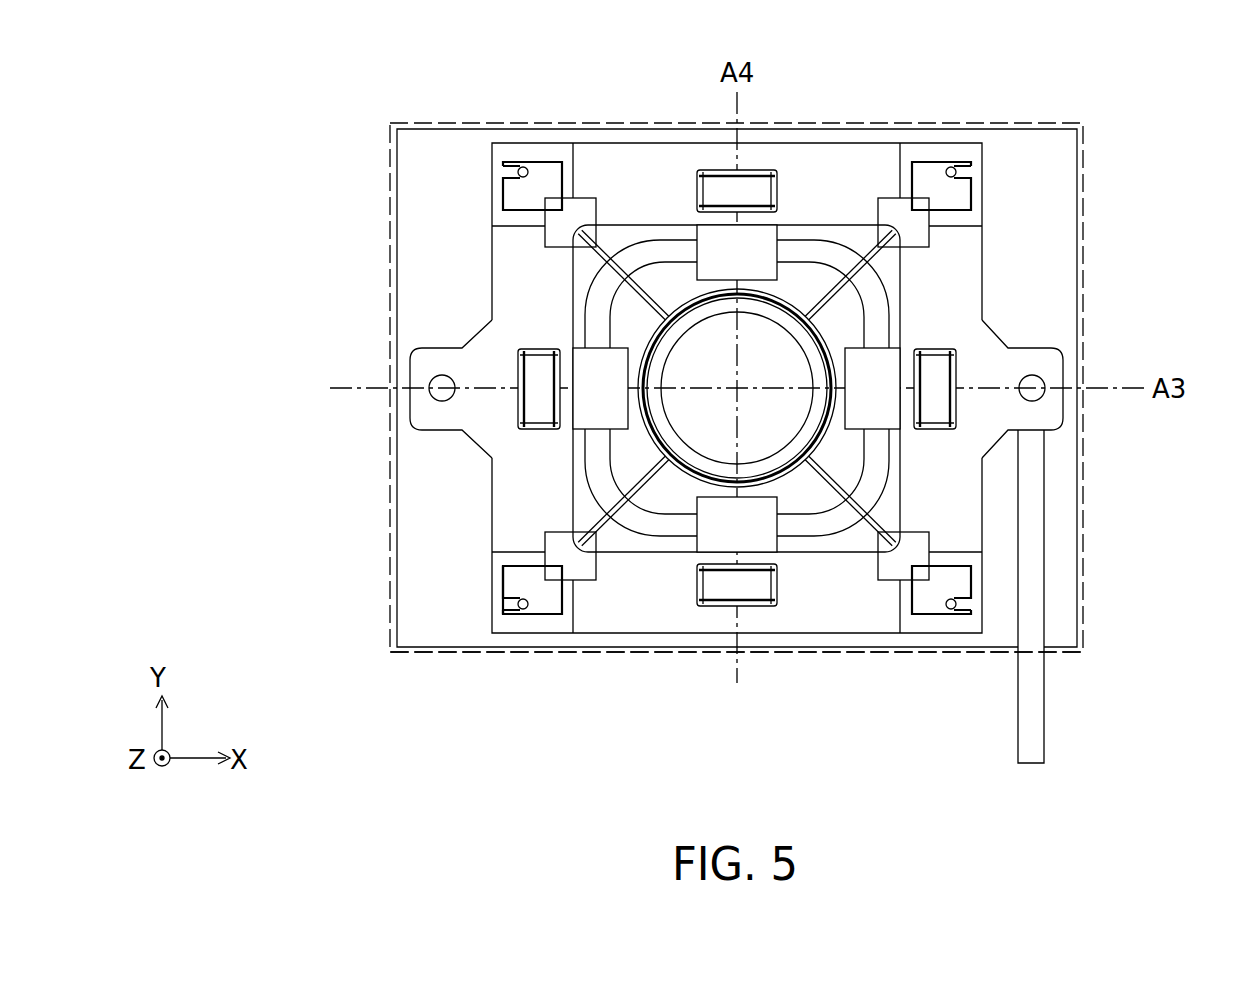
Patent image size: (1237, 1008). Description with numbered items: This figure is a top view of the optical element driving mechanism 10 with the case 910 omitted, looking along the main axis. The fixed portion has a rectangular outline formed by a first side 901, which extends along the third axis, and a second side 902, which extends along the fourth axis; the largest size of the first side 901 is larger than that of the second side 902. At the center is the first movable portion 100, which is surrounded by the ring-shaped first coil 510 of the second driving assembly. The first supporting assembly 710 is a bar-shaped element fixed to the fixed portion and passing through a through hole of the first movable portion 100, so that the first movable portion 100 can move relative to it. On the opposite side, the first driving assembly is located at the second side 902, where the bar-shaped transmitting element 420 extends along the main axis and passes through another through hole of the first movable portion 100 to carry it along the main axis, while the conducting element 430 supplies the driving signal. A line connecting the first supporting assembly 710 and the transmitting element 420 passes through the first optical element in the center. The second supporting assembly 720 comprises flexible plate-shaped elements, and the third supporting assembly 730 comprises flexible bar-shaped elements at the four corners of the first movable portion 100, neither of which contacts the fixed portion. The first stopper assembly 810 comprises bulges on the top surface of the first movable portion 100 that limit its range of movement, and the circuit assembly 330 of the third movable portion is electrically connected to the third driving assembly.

The optical element driving mechanism 10 is at (180, 67).
The first movable portion 100 is at (445, 420).
The circuit assembly 330 is at (517, 580).
The transmitting element 420 is at (1036, 381).
The conducting element 430 is at (1033, 700).
The first coil 510 is at (600, 298).
The first supporting assembly 710 is at (437, 380).
The second supporting assembly 720 is at (558, 543).
The third supporting assembly 730 is at (523, 168).
The first stopper assembly 810 is at (752, 186).
The first side 901 is at (885, 653).
The second side 902 is at (1083, 563).
The case 910 is at (1047, 212).